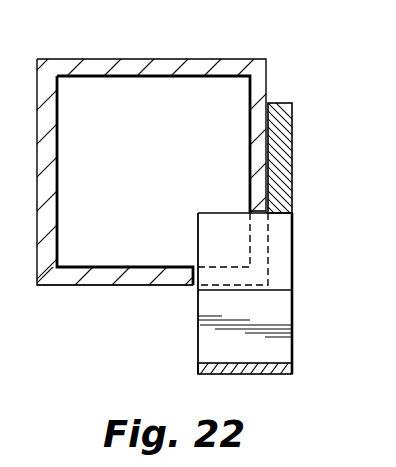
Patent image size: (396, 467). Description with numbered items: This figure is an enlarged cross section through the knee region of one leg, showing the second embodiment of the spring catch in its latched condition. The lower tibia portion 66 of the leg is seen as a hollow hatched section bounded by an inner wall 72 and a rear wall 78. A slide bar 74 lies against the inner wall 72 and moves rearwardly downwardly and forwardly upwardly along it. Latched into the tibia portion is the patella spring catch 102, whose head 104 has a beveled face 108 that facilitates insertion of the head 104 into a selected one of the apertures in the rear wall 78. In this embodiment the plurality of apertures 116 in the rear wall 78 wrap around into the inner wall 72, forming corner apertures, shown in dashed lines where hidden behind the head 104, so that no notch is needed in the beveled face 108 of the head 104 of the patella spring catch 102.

The lower tibia portion 66 is at (75, 64).
The inner wall 72 is at (268, 77).
The slide bar 74 is at (293, 153).
The rear wall 78 is at (100, 287).
The patella spring catch 102 is at (207, 373).
The head 104 is at (280, 345).
The beveled face 108 is at (283, 250).
The plurality of apertures 116 is at (217, 274).